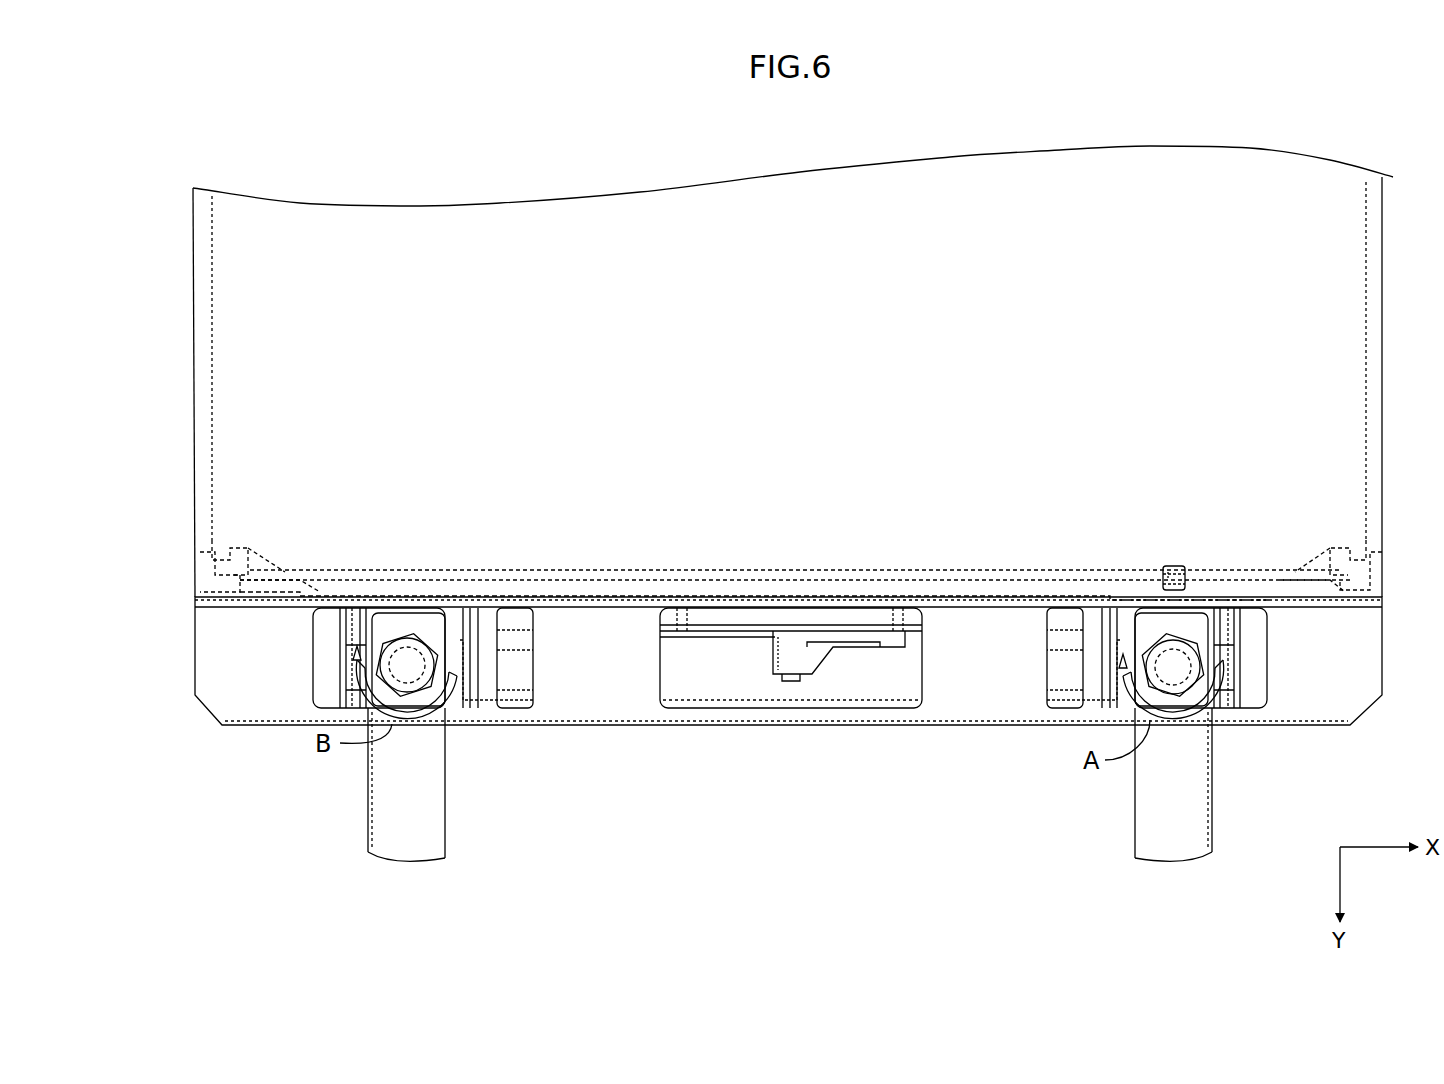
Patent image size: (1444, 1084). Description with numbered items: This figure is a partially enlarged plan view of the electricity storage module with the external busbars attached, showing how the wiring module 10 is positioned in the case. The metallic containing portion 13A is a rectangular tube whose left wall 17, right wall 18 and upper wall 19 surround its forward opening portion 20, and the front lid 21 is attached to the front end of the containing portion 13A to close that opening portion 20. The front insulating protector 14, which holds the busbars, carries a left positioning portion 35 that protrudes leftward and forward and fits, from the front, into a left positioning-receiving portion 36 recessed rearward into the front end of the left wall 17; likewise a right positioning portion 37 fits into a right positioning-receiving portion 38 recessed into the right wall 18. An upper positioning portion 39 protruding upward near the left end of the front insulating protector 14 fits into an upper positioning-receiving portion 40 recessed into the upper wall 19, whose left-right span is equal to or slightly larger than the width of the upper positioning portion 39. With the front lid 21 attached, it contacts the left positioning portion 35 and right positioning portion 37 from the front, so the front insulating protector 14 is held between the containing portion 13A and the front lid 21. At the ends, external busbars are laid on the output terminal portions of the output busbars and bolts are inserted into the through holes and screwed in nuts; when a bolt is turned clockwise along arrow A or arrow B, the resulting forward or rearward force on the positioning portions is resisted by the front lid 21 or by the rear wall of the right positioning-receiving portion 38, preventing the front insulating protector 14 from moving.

The wiring module 10 is at (855, 668).
The containing portion 13A is at (640, 213).
The front insulating protector 14 is at (790, 650).
The left wall 17 is at (1380, 256).
The right wall 18 is at (200, 240).
The upper wall 19 is at (435, 262).
The opening portion 20 is at (228, 525).
The front lid 21 is at (643, 690).
The left positioning portion 35 is at (1384, 586).
The left positioning-receiving portion 36 is at (1384, 557).
The right positioning portion 37 is at (200, 582).
The right positioning-receiving portion 38 is at (200, 560).
The upper positioning portion 39 is at (1166, 568).
The upper positioning-receiving portion 40 is at (1172, 568).